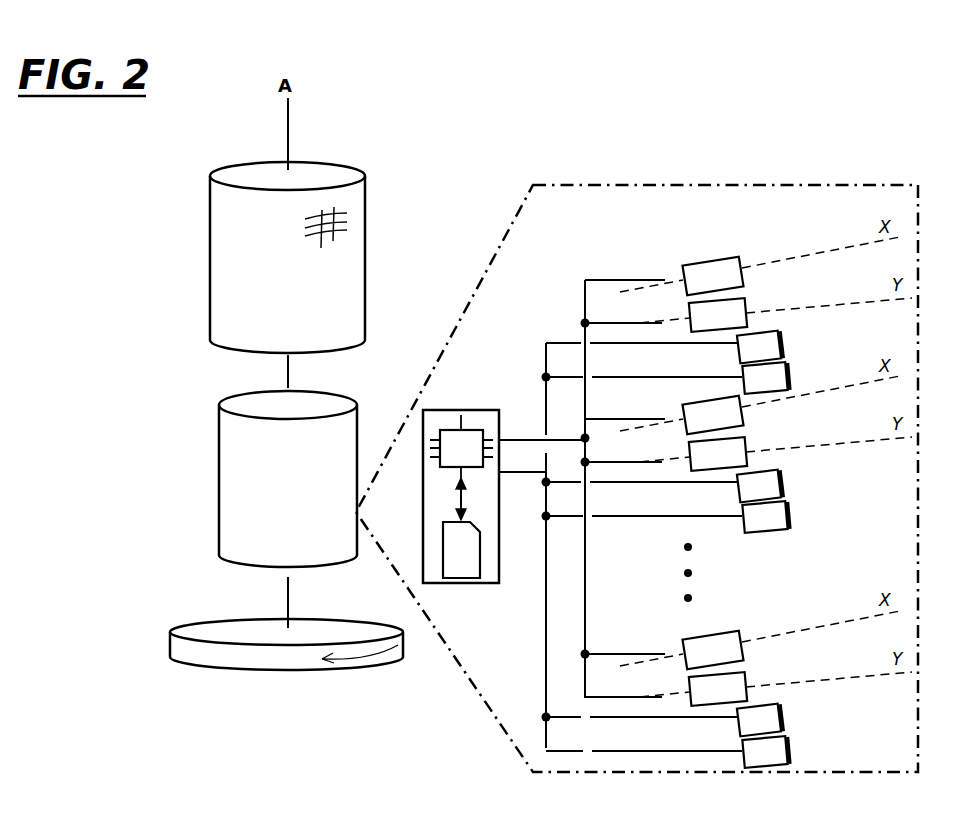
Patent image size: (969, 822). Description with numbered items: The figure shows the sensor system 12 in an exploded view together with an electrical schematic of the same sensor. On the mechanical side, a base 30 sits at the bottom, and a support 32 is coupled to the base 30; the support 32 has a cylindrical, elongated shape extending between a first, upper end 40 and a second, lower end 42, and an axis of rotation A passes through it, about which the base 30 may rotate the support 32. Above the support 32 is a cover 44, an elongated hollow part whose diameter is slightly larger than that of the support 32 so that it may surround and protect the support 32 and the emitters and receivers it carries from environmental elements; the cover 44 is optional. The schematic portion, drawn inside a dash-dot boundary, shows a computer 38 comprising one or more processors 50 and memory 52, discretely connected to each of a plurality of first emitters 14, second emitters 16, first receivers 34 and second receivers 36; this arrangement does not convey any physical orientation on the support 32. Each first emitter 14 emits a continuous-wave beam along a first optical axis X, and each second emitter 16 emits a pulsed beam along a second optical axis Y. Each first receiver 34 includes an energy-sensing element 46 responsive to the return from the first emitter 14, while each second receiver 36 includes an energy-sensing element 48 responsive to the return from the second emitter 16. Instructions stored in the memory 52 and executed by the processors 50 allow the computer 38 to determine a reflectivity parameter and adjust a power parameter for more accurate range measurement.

The sensor system 12 is at (362, 98).
The first emitter 14 is at (713, 463).
The second emitter 16 is at (718, 502).
The base 30 is at (160, 644).
The support 32 is at (246, 491).
The first receiver 34 is at (759, 534).
The second receiver 36 is at (764, 565).
The computer 38 is at (471, 470).
The first end 40 is at (237, 410).
The second end 42 is at (257, 565).
The cover 44 is at (201, 247).
The energy-sensing element 46 is at (815, 719).
The energy-sensing element 48 is at (820, 749).
The processor 50 is at (452, 458).
The memory 52 is at (452, 559).